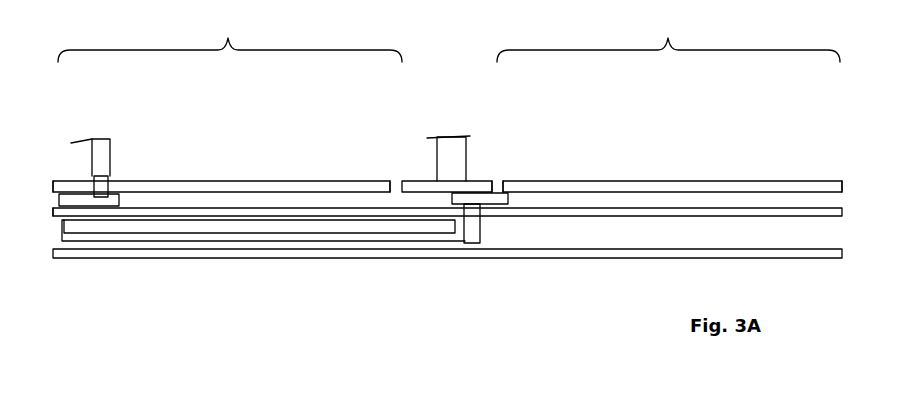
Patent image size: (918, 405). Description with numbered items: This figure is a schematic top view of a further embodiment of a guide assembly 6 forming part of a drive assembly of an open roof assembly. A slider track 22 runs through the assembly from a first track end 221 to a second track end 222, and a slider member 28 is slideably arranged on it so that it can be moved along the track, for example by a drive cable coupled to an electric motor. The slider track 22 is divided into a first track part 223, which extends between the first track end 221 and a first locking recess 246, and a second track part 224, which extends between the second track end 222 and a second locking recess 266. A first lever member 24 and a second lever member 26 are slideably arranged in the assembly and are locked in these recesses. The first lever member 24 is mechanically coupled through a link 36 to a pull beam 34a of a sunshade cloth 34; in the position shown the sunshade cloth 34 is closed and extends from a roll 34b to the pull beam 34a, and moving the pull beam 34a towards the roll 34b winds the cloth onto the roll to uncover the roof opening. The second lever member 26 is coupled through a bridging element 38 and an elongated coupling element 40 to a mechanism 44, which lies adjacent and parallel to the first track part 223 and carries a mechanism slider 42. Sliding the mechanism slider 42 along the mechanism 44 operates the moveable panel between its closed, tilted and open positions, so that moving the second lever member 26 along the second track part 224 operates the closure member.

The guide assembly 6 is at (409, 103).
The slider track 22 is at (206, 202).
The first lever member 24 is at (83, 190).
The second lever member 26 is at (503, 202).
The slider member 28 is at (60, 197).
The sunshade cloth 34 is at (272, 161).
The pull beam 34a is at (103, 160).
The roll 34b is at (460, 160).
The link 36 is at (105, 187).
The bridging element 38 is at (474, 231).
The elongated coupling element 40 is at (302, 240).
The mechanism slider 42 is at (78, 237).
The mechanism 44 is at (162, 226).
The first track end 221 is at (47, 225).
The second track end 222 is at (836, 195).
The first track part 223 is at (230, 34).
The second track part 224 is at (668, 35).
The first locking recess 246 is at (394, 195).
The second locking recess 266 is at (496, 178).